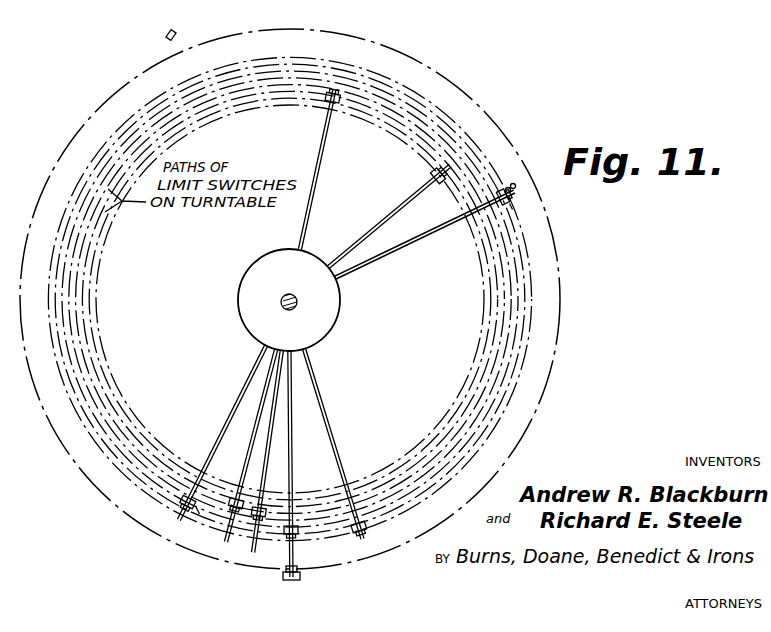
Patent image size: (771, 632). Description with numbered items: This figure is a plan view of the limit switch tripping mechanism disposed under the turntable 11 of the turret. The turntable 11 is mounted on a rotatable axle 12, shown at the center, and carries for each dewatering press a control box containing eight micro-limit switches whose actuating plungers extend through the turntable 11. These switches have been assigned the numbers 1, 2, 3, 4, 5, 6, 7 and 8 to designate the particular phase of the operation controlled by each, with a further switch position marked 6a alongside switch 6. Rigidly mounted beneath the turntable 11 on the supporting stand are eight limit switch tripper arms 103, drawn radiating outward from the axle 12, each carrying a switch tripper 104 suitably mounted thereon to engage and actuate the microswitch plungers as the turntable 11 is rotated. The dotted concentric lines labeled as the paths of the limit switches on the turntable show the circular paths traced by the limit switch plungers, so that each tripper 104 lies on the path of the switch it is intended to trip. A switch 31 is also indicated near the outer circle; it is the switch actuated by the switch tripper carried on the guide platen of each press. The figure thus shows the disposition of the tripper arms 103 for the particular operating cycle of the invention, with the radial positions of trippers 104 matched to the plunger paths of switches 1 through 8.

The limit switch number one 1 is at (451, 166).
The limit switch number two 2 is at (336, 70).
The limit switch number three 3 is at (229, 531).
The limit switch number four 4 is at (256, 537).
The limit switch number five 5 is at (181, 518).
The limit switch number six 6 is at (299, 531).
The limit switch 6a is at (299, 602).
The limit switch number seven 7 is at (362, 540).
The limit switch number eight 8 is at (510, 192).
The turntable 11 is at (562, 273).
The rotatable axle 12 is at (289, 294).
The switch 31 is at (176, 33).
The limit switch tripper arm 103 is at (316, 192).
The switch tripper 104 is at (510, 199).